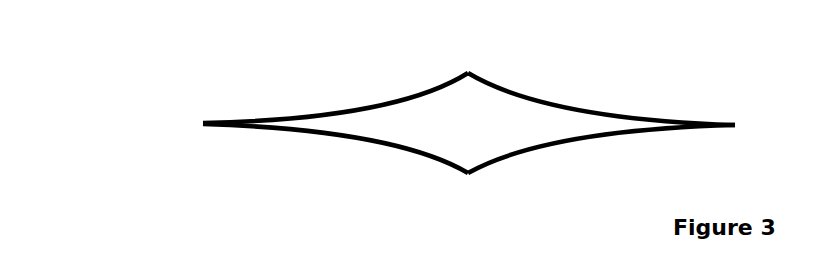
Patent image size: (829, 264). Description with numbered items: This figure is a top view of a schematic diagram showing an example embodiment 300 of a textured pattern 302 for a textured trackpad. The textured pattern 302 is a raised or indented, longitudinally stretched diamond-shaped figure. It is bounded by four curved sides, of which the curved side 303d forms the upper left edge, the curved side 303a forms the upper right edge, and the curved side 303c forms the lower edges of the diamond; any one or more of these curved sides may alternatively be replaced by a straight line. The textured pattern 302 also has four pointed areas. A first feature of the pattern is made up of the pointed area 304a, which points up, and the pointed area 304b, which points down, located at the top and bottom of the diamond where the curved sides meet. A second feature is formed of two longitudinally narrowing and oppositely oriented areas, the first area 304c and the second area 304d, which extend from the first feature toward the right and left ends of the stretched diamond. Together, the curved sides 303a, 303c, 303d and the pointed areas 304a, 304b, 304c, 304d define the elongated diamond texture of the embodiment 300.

The example embodiment 300 is at (113, 117).
The textured pattern 302 is at (391, 164).
The curved side 303a is at (532, 98).
The curved side 303c is at (380, 141).
The curved side 303d is at (408, 99).
The pointed area 304a is at (487, 85).
The pointed area 304b is at (455, 166).
The first area 304c is at (610, 113).
The second area 304d is at (331, 105).